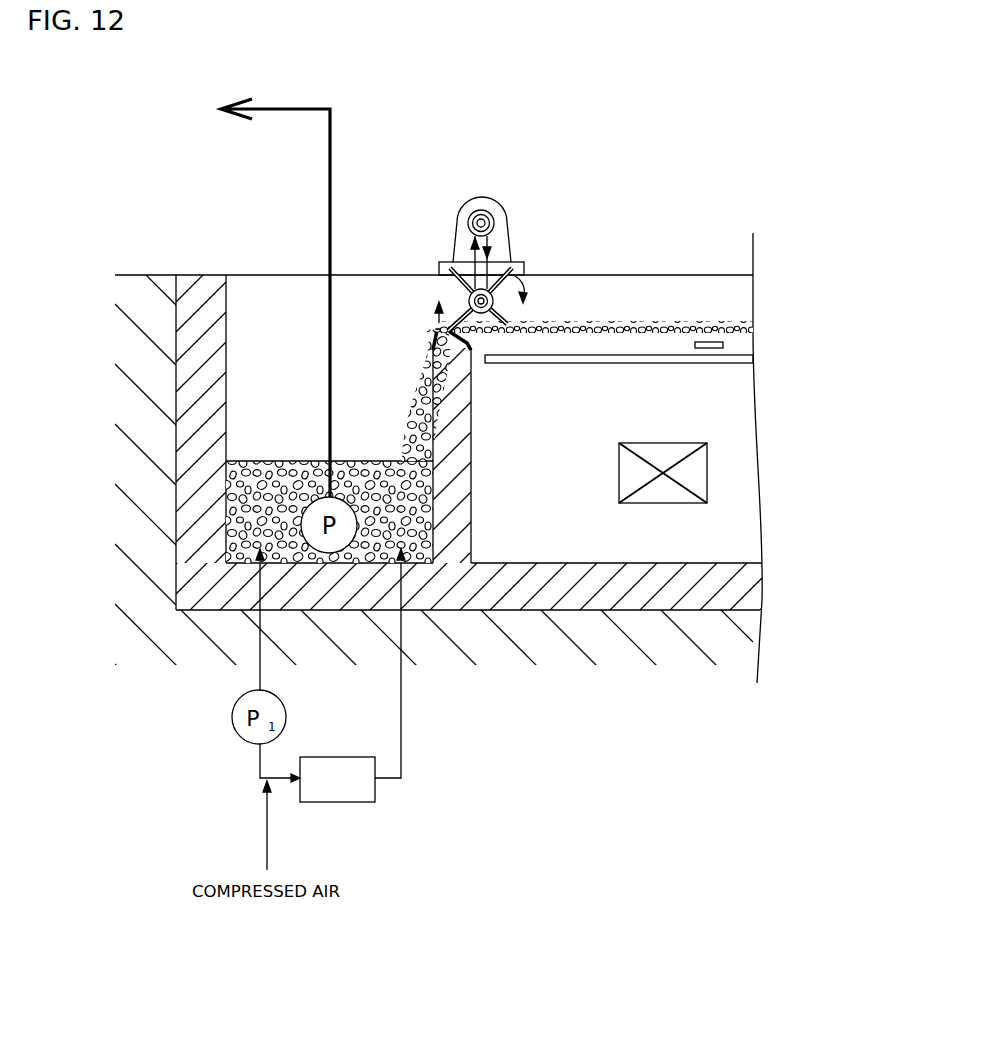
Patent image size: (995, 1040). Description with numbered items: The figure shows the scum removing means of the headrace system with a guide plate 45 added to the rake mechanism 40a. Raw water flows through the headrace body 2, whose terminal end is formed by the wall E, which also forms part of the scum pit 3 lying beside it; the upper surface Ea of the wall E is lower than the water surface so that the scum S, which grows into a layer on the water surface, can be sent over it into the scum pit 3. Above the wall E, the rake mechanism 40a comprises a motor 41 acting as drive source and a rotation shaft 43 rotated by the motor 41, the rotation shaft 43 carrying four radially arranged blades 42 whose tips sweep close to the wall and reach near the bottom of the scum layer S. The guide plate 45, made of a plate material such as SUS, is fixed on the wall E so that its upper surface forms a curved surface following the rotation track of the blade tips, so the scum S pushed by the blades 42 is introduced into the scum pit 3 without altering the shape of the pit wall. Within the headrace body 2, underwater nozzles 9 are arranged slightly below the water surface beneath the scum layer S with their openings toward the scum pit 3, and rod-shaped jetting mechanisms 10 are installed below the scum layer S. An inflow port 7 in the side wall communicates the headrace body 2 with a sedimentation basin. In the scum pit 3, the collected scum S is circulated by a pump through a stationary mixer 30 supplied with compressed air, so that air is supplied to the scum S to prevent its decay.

The headrace body 2 is at (717, 254).
The scum pit 3 is at (299, 381).
The inflow port 7 is at (700, 470).
The underwater nozzle 9 is at (711, 349).
The jetting mechanism 10 is at (753, 358).
The stationary mixer 30 is at (360, 803).
The rake mechanism 40a is at (504, 198).
The motor 41 is at (473, 198).
The blade 42 is at (452, 268).
The rotation shaft 43 is at (469, 305).
The guide plate 45 is at (472, 337).
The wall E is at (455, 469).
The upper surface of the wall Ea is at (410, 333).
The scum S is at (638, 323).